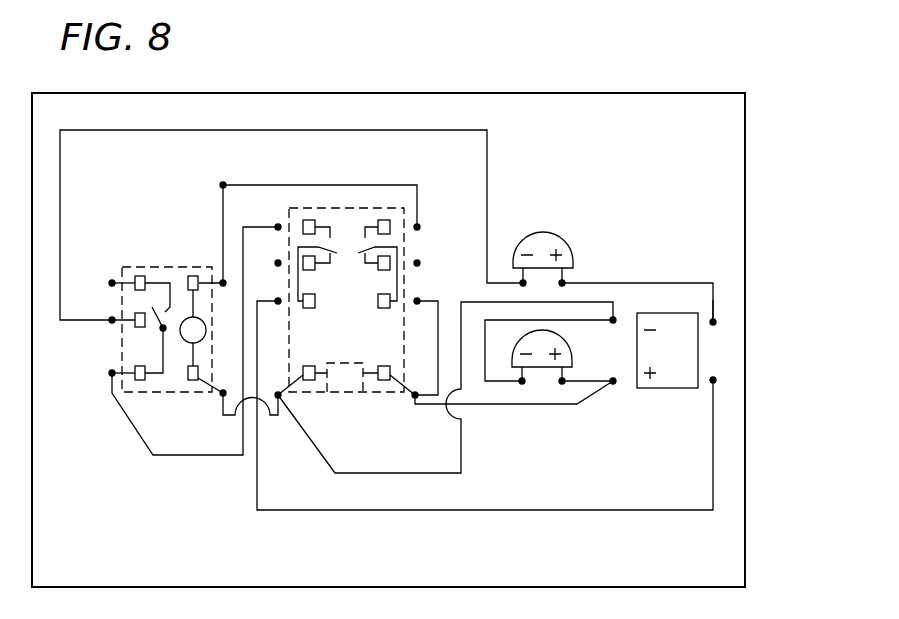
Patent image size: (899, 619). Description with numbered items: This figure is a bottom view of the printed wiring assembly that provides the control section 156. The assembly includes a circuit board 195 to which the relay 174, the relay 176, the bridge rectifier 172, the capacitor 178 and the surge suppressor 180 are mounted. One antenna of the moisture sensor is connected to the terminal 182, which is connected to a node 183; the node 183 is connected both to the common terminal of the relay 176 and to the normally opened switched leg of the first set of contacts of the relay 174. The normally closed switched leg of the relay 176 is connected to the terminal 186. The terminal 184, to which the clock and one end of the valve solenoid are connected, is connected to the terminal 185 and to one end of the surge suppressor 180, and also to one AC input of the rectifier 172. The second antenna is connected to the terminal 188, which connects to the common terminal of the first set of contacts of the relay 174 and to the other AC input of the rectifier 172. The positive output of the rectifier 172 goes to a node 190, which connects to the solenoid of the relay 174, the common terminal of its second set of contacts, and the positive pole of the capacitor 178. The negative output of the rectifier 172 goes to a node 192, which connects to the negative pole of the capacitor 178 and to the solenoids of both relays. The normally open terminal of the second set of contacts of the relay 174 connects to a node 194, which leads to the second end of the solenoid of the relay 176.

The control section 156 is at (669, 80).
The circuit board 195 is at (718, 108).
The node 194 is at (223, 185).
The node 183 is at (278, 227).
The terminal 182 is at (112, 373).
The terminal 186 is at (112, 322).
The relay 176 is at (160, 278).
The relay 174 is at (417, 263).
The surge suppressor 180 is at (538, 233).
The terminal 185 is at (562, 283).
The terminal 184 is at (715, 322).
The node 192 is at (613, 320).
The capacitor 178 is at (545, 362).
The node 190 is at (613, 382).
The bridge rectifier 172 is at (698, 355).
The terminal 188 is at (714, 382).